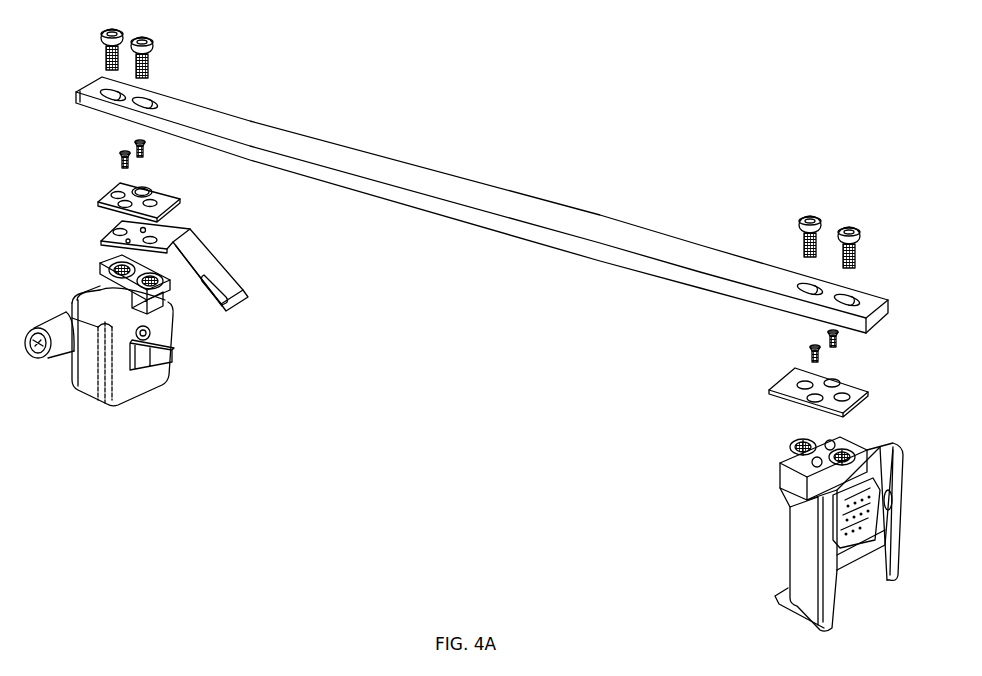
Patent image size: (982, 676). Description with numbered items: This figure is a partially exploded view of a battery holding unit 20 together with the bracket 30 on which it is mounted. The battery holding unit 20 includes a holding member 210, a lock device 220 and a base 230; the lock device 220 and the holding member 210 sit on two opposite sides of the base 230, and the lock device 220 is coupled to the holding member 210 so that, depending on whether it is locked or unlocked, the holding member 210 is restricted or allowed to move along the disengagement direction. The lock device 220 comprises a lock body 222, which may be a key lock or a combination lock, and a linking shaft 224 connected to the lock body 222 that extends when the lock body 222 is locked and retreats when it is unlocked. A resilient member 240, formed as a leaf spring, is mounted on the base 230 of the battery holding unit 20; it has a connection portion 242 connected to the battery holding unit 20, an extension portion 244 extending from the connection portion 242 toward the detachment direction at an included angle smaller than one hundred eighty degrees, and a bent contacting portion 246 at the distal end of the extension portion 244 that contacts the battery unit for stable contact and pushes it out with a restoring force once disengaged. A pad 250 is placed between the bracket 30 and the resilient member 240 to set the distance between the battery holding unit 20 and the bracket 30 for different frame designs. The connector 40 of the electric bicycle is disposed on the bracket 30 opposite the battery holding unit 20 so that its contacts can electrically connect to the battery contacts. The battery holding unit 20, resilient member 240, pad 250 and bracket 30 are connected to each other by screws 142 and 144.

The battery holding unit 20 is at (123, 339).
The bracket 30 is at (605, 235).
The connector 40 is at (880, 445).
The screws 142 is at (142, 152).
The screws 144 is at (150, 42).
The holding member 210 is at (170, 360).
The lock device 220 is at (58, 352).
The lock body 222 is at (23, 357).
The linking shaft 224 is at (152, 331).
The base 230 is at (90, 392).
The resilient member 240 is at (200, 260).
The connection portion 242 is at (177, 231).
The extension portion 244 is at (202, 268).
The contacting portion 246 is at (246, 290).
The pad 250 is at (175, 197).